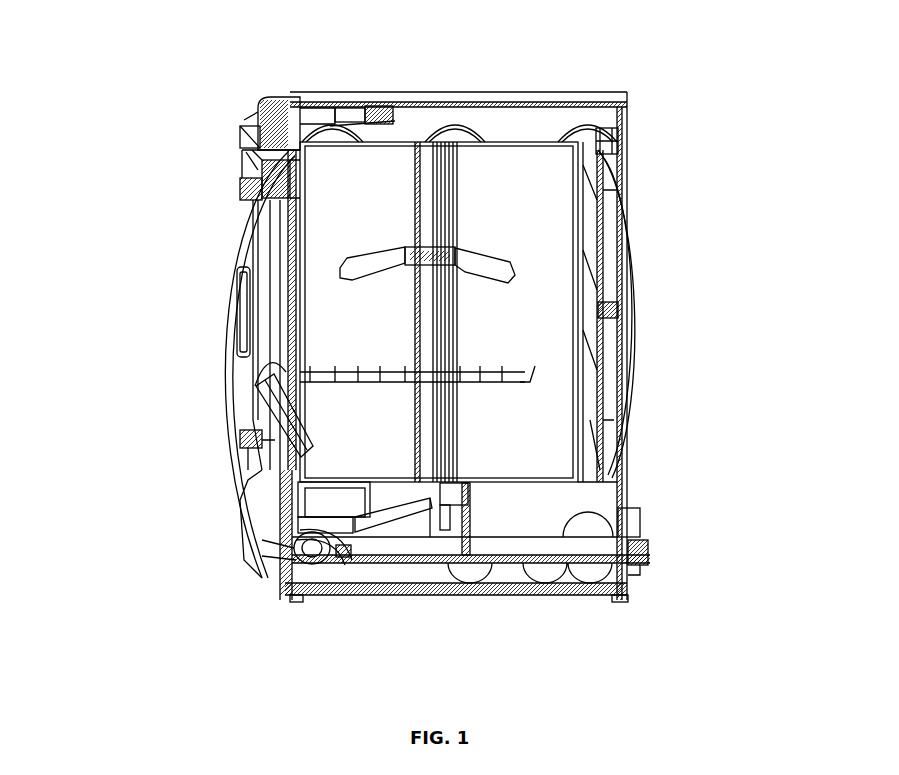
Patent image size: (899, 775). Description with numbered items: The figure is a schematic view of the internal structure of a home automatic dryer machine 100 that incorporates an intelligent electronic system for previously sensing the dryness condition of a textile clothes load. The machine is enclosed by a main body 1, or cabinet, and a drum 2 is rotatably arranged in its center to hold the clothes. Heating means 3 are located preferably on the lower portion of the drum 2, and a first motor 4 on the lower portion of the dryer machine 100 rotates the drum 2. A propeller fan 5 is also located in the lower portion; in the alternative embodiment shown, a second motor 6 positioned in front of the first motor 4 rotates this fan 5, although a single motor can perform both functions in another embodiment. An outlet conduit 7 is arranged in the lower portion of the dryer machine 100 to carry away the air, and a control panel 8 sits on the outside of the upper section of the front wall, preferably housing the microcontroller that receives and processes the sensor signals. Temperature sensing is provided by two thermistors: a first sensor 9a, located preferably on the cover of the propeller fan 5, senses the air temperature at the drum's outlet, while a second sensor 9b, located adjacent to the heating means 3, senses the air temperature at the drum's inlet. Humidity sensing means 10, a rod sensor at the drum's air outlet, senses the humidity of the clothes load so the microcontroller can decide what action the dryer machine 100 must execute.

The dryer machine 100 is at (190, 311).
The main body 1 is at (313, 126).
The drum 2 is at (560, 159).
The heating means 3 is at (607, 290).
The first motor 4 is at (401, 538).
The propeller fan 5 is at (290, 557).
The second motor 6 is at (364, 538).
The outlet conduit 7 is at (655, 553).
The control panel 8 is at (233, 138).
The first sensor 9a is at (337, 562).
The second sensor 9b is at (604, 128).
The humidity sensing means 10 is at (253, 443).